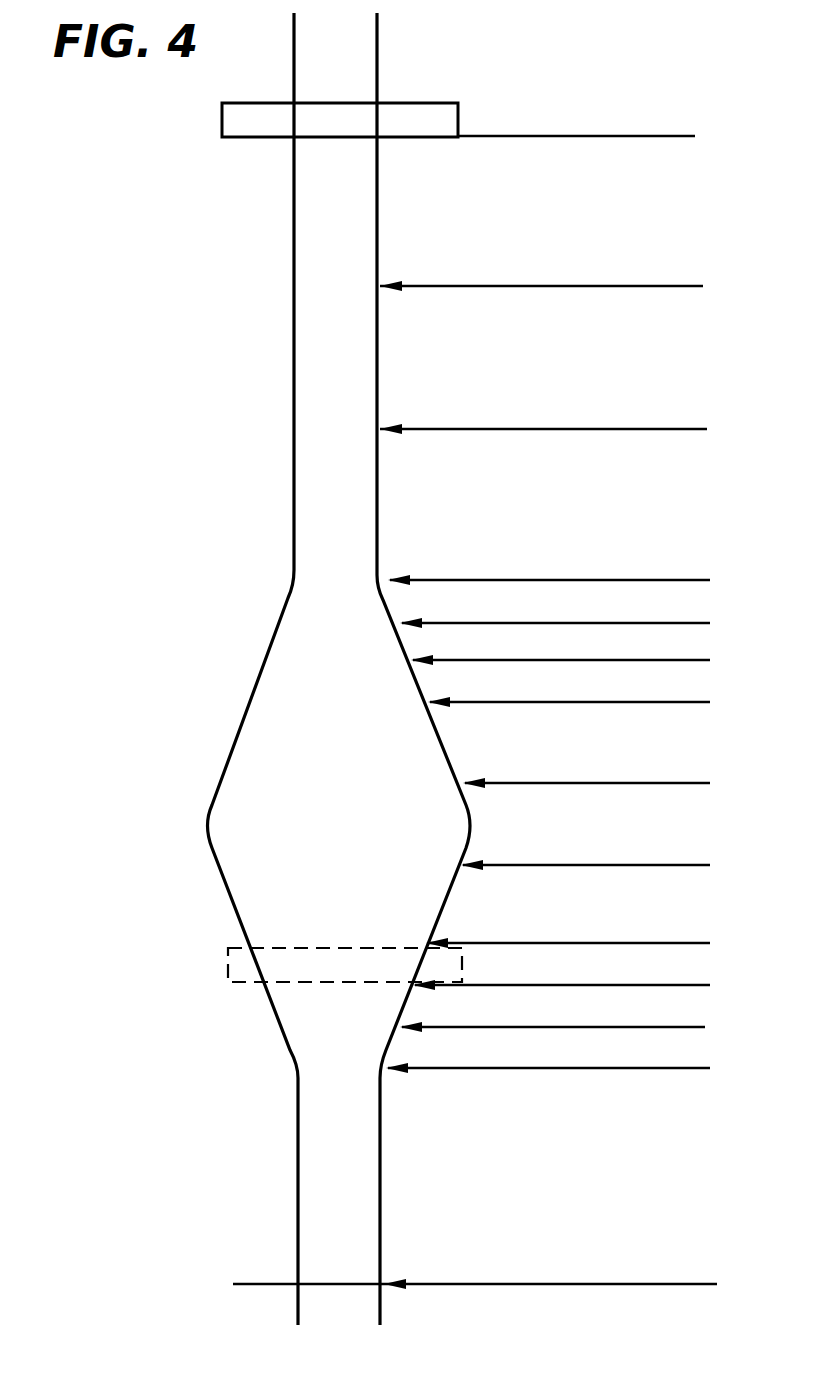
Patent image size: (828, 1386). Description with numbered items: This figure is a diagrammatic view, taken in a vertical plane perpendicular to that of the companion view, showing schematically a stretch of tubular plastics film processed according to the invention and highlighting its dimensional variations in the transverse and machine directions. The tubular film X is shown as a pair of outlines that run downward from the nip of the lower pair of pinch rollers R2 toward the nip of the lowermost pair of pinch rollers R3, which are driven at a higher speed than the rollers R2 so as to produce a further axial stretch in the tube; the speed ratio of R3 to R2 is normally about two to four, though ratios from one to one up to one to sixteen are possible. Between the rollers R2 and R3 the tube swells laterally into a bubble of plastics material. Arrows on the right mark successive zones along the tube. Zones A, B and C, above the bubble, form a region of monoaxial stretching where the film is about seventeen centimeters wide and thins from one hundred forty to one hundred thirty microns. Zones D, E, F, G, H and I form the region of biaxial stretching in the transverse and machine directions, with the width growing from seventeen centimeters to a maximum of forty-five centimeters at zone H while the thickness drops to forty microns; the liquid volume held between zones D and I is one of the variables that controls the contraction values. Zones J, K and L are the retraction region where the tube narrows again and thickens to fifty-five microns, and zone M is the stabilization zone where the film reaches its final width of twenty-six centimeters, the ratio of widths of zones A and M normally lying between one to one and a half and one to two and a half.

The drilling tool profile X is at (218, 784).
The lower pair of pinch rollers R2 is at (224, 120).
The lowermost pair of pinch rollers R3 is at (228, 970).
The zone A is at (541, 242).
The zone B is at (543, 393).
The zone C is at (549, 547).
The zone D is at (555, 606).
The zone E is at (560, 643).
The zone F is at (569, 684).
The zone G is at (586, 759).
The zone H is at (585, 843).
The zone I is at (568, 920).
The zone J is at (561, 967).
The zone K is at (552, 1010).
The zone L is at (548, 1050).
The zone M is at (475, 1230).